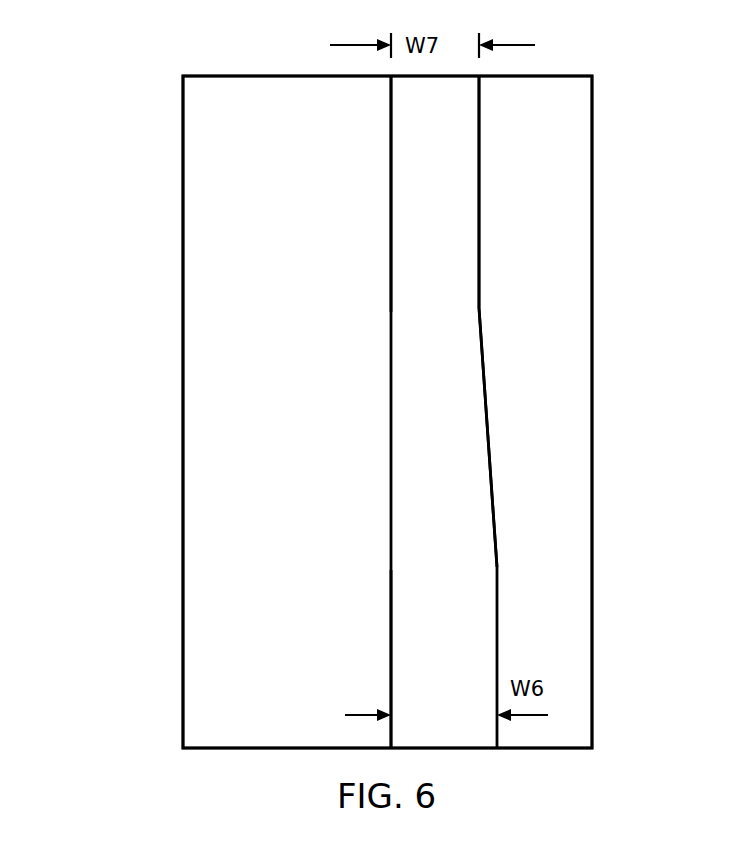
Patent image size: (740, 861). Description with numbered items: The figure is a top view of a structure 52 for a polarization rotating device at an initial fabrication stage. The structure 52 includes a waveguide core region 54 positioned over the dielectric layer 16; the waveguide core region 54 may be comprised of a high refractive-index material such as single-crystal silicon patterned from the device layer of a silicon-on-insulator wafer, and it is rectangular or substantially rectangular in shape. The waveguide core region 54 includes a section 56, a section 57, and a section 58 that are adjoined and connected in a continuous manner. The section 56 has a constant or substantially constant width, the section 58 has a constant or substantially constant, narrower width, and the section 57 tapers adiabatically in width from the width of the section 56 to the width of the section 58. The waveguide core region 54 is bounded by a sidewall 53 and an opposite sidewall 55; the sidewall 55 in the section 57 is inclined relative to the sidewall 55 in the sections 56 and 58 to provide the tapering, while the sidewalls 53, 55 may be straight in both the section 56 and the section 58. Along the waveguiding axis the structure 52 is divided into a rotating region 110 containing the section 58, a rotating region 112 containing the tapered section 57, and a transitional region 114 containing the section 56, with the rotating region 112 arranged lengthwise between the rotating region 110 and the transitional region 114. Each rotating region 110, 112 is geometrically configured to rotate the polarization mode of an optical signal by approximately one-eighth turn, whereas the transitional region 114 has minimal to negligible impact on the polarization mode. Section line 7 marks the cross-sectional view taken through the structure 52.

The structure 52 is at (152, 52).
The dielectric layer 16 is at (235, 684).
The sidewall 53 is at (391, 473).
The waveguide core region 54 is at (363, 183).
The sidewall 55 is at (479, 193).
The section 56 is at (420, 649).
The section 57 is at (445, 385).
The section 58 is at (447, 122).
The cross-section line 7 is at (248, 348).
The rotating region 110 is at (149, 94).
The rotating region 112 is at (110, 312).
The transitional region 114 is at (137, 570).